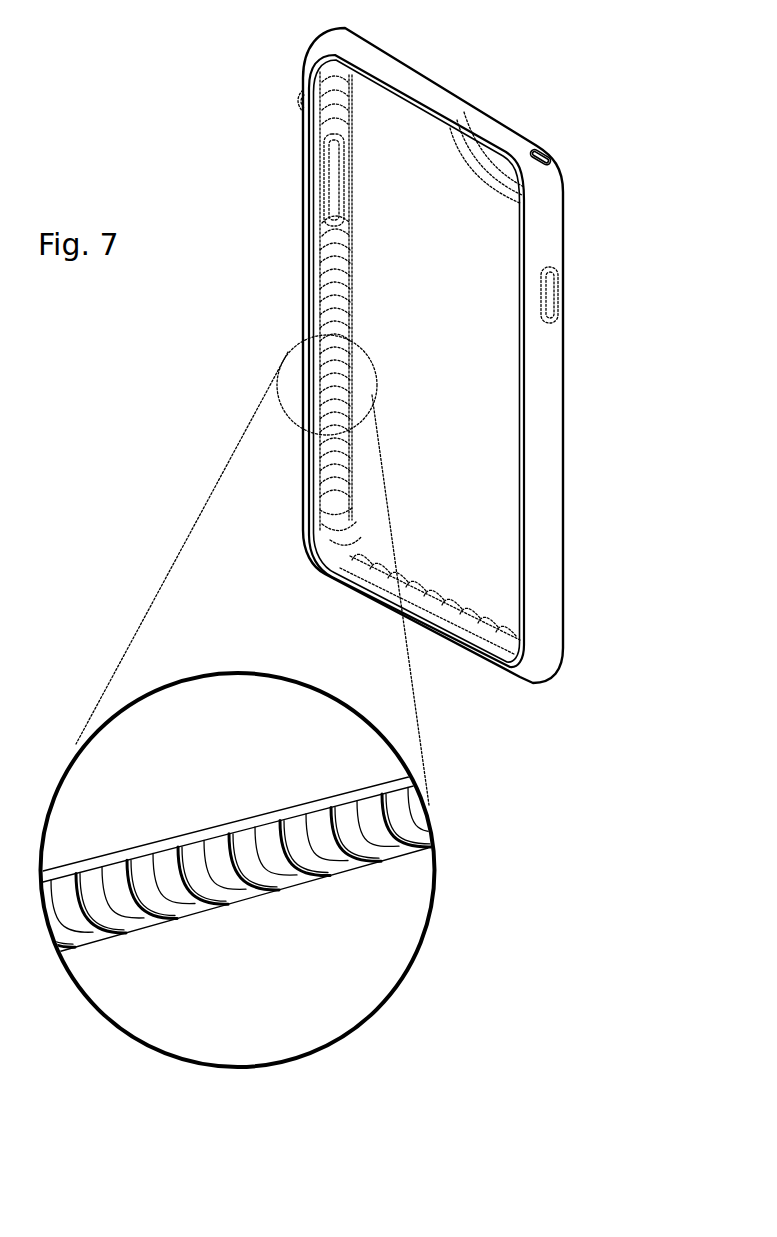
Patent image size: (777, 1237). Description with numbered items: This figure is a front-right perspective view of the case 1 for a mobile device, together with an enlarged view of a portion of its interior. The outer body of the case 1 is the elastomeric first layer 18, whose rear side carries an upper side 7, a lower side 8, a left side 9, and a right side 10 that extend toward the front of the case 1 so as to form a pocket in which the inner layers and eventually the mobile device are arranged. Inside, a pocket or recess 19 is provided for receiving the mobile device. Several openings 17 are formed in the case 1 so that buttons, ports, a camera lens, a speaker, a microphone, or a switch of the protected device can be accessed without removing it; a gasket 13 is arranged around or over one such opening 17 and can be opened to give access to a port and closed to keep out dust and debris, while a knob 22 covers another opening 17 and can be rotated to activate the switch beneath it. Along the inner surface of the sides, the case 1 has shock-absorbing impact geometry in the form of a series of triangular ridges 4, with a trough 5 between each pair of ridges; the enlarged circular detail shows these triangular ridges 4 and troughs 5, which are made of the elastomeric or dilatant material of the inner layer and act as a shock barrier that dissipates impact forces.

The case 1 is at (238, 365).
The triangular ridges 4 is at (335, 367).
The trough 5 is at (335, 300).
The upper side 7 is at (444, 93).
The lower side 8 is at (450, 647).
The left side 9 is at (305, 318).
The right side 10 is at (545, 451).
The gasket 13 is at (443, 617).
The openings 17 is at (500, 163).
The first layer 18 is at (550, 557).
The pocket or recess 19 is at (426, 260).
The knob 22 is at (297, 100).